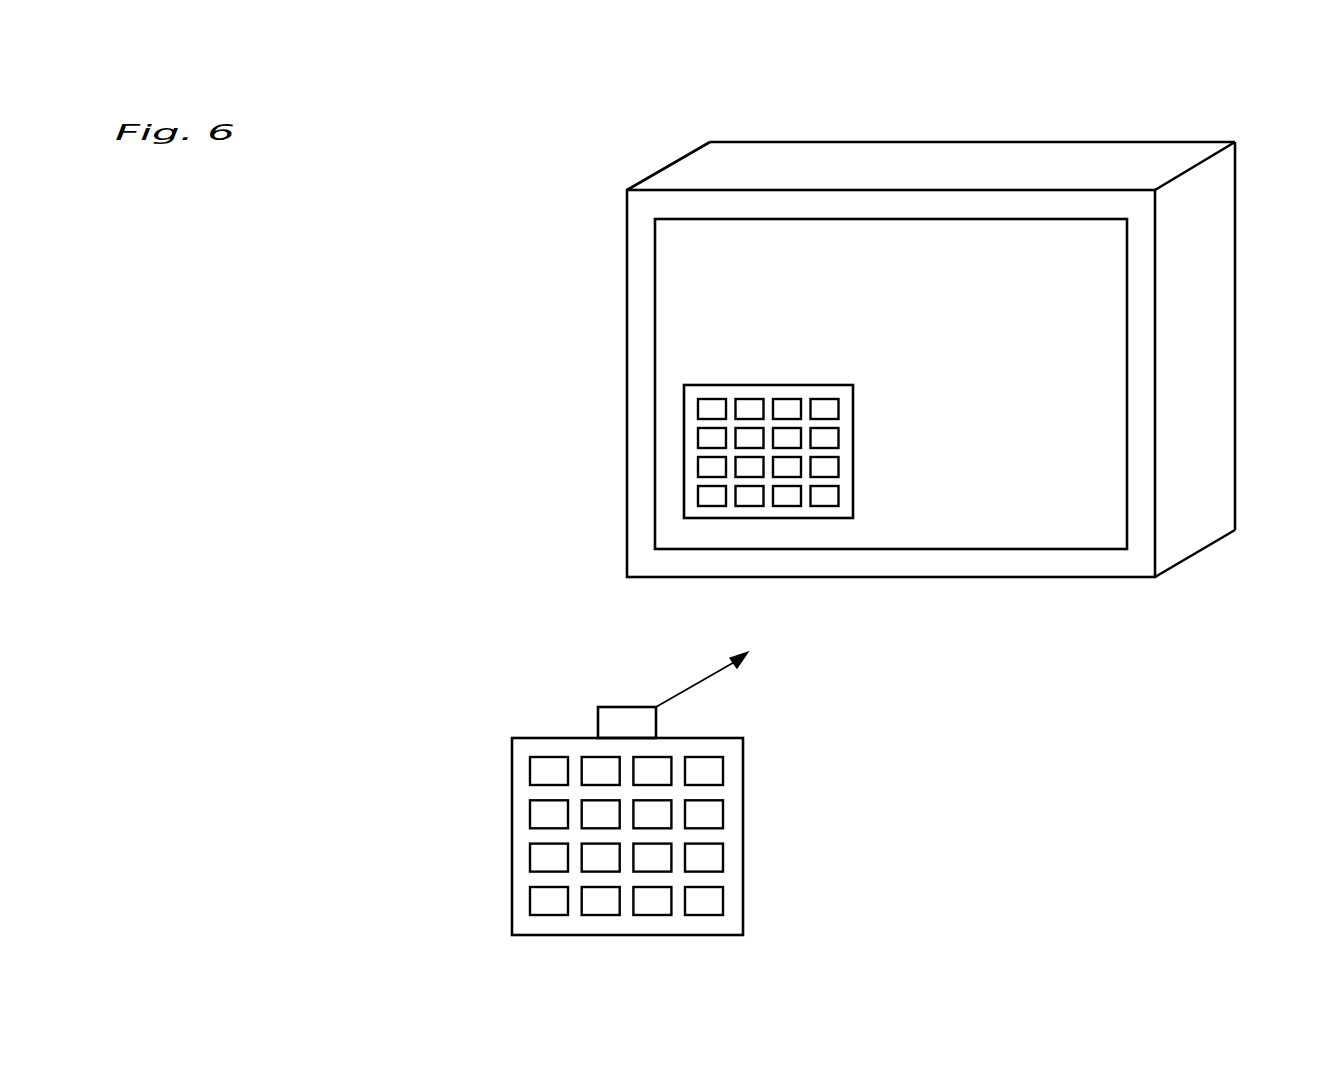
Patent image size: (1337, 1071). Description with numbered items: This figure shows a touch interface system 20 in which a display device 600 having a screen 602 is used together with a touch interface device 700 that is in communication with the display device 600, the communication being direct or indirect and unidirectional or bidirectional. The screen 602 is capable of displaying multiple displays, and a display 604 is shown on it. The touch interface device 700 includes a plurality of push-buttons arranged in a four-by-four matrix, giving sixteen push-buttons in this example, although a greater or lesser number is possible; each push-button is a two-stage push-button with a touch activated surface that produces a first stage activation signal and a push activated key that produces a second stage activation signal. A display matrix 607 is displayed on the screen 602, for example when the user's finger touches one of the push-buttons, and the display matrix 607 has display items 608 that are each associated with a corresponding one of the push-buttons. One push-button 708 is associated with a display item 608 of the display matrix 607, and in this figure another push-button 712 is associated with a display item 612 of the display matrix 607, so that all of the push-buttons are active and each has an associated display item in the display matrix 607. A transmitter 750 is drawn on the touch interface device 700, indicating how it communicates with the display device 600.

The touch interface system 20 is at (1042, 858).
The display device 600 is at (1236, 335).
The screen 602 is at (1005, 242).
The display 604 is at (1042, 492).
The display matrix 607 is at (703, 383).
The display items 608 is at (697, 442).
The display item 612 is at (702, 507).
The touch interface device 700 is at (743, 880).
The push-button 708 is at (528, 822).
The push-button 712 is at (537, 915).
The transmitter 750 is at (606, 707).